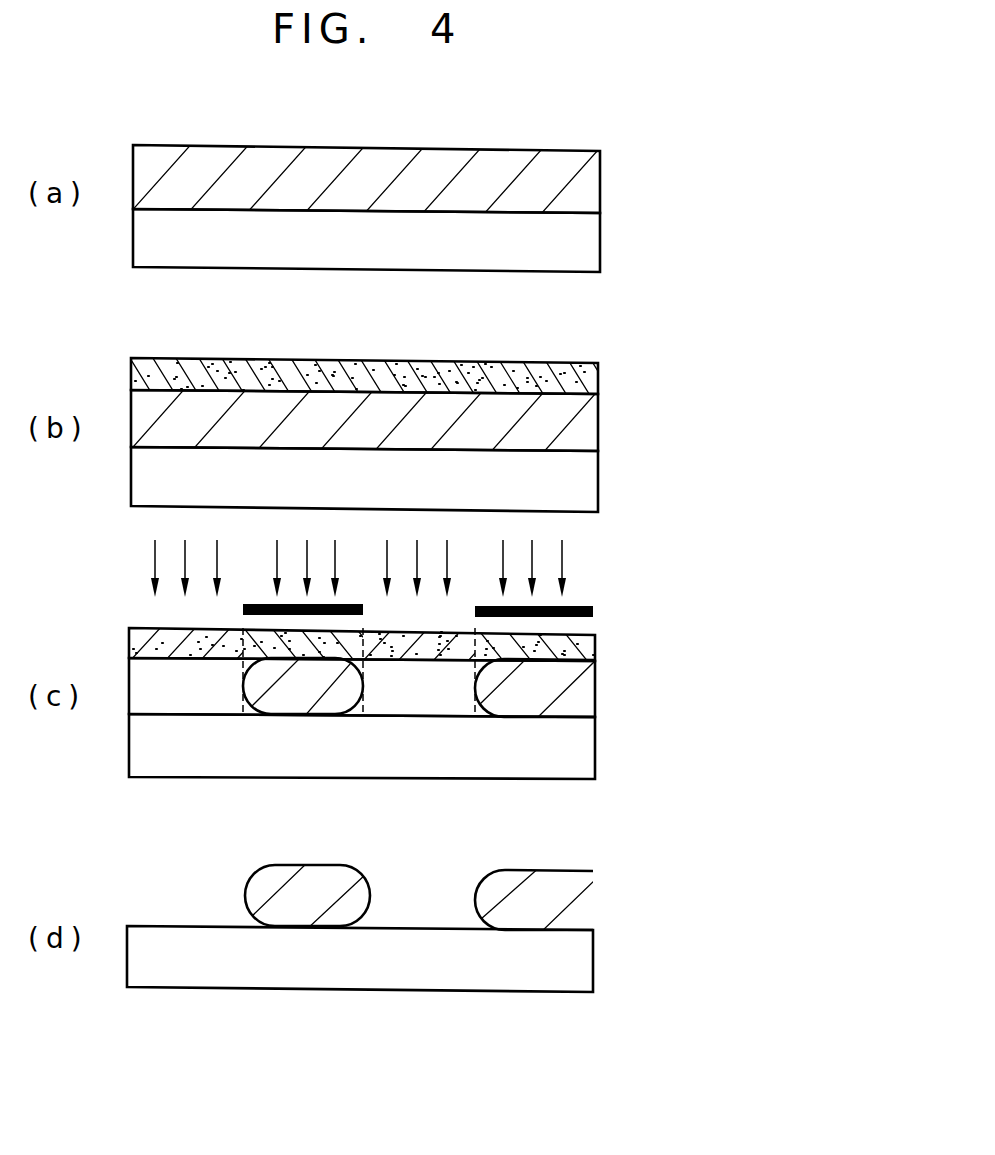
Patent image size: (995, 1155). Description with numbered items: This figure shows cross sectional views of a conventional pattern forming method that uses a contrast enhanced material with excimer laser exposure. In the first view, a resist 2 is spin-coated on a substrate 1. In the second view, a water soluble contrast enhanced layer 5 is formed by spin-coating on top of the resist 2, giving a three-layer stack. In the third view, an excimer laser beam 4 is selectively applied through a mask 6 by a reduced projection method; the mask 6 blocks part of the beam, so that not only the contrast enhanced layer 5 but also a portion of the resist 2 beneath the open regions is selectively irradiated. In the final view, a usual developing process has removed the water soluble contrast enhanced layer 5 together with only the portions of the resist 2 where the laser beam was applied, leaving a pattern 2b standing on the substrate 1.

The substrate 1 is at (592, 247).
The resist 2 is at (598, 190).
The pattern 2b is at (580, 910).
The excimer laser beam 4 is at (583, 578).
The water soluble contrast enhanced layer 5 is at (598, 380).
The mask 6 is at (595, 613).